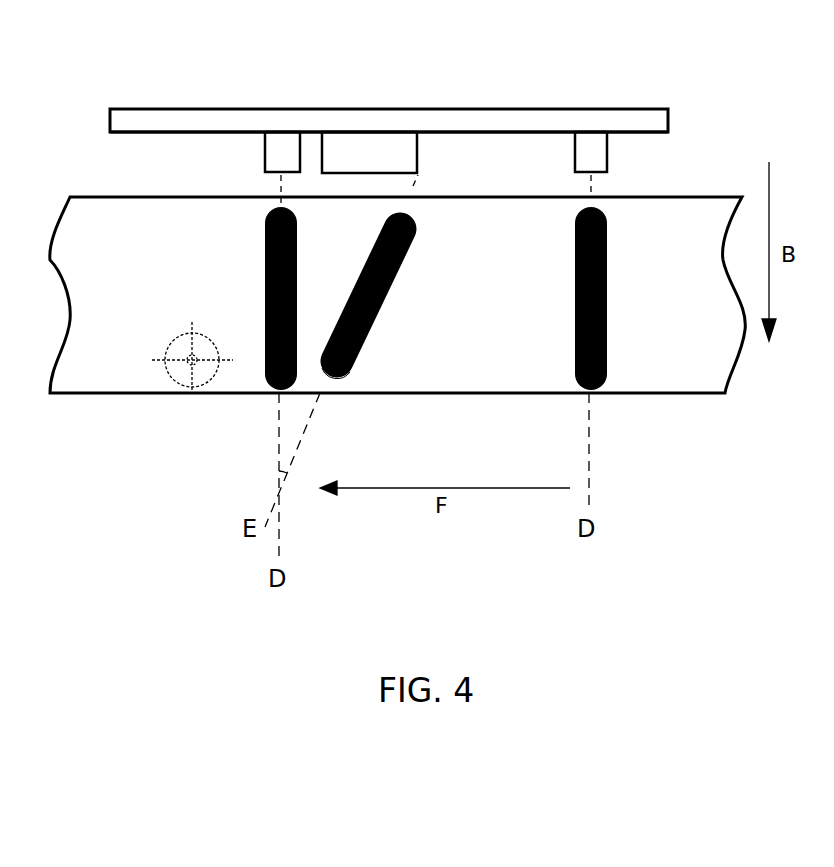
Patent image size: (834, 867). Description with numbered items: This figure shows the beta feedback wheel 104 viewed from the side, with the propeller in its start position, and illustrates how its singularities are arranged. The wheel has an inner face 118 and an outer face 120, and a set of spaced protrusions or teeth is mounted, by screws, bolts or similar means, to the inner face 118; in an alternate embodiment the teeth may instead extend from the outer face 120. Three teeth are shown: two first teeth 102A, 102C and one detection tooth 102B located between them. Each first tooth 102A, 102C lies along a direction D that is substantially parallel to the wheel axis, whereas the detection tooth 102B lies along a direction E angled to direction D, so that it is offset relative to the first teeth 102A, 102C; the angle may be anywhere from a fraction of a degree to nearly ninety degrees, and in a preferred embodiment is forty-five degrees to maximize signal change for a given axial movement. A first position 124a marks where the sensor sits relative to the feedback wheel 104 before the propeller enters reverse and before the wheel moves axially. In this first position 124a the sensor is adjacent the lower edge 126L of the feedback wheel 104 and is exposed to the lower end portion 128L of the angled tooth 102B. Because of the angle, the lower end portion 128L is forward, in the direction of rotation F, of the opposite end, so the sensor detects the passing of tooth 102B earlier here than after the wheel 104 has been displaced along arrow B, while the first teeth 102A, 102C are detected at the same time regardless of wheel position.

The feedback wheel 104 is at (349, 97).
The outer face 120 is at (163, 110).
The inner face 118 is at (157, 133).
The first tooth 102A is at (275, 137).
The detection tooth 102B is at (375, 153).
The first tooth 102C is at (582, 137).
The first position 124a is at (161, 385).
The lower end portion 128L is at (345, 388).
The lower edge 126L is at (683, 395).